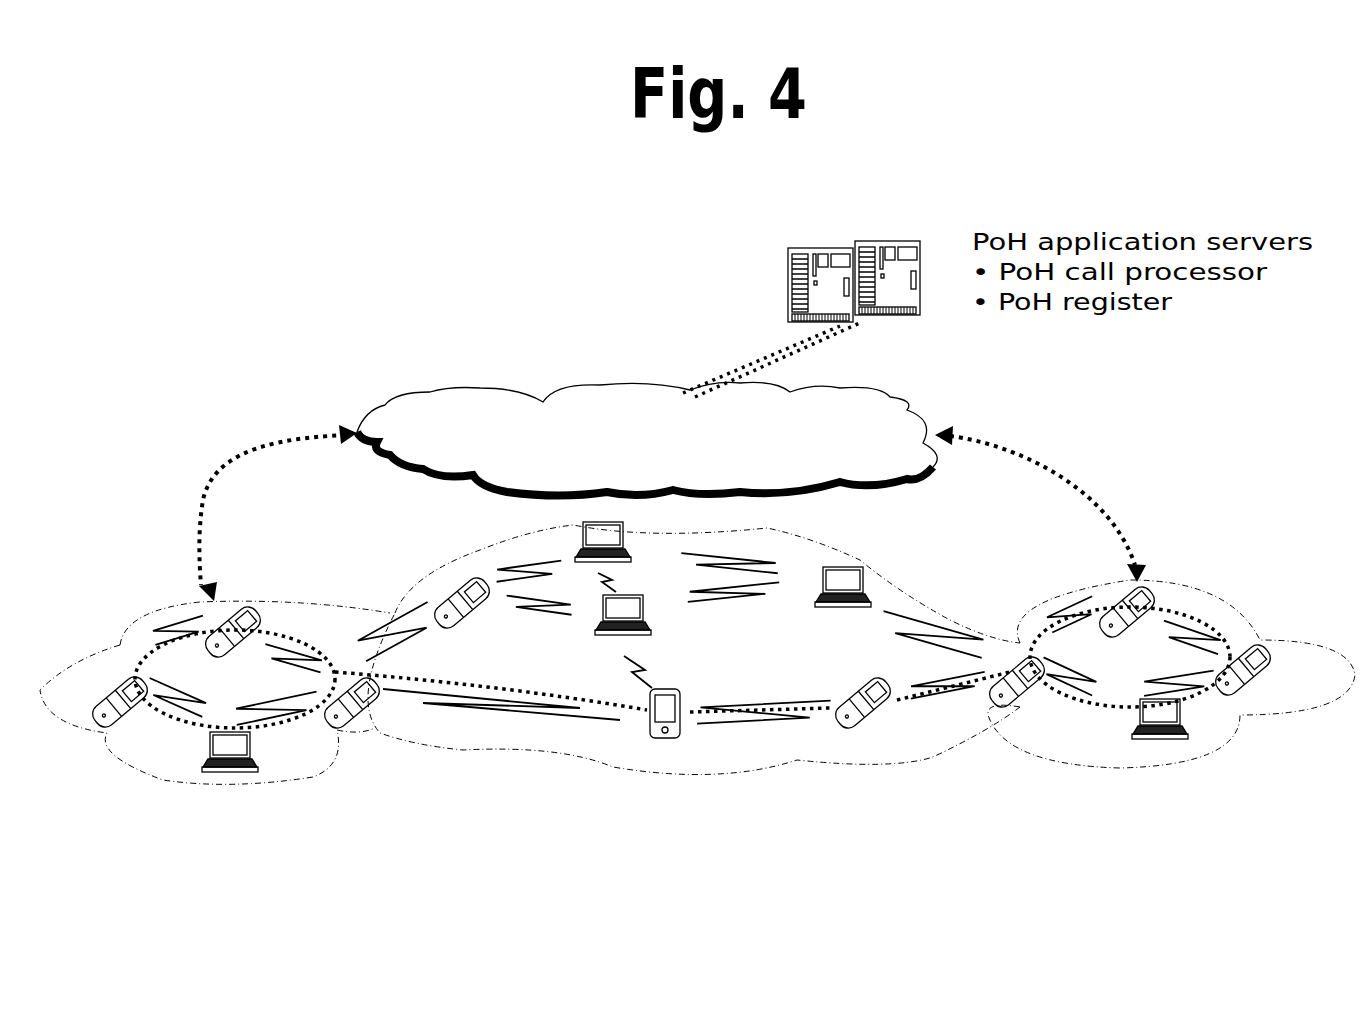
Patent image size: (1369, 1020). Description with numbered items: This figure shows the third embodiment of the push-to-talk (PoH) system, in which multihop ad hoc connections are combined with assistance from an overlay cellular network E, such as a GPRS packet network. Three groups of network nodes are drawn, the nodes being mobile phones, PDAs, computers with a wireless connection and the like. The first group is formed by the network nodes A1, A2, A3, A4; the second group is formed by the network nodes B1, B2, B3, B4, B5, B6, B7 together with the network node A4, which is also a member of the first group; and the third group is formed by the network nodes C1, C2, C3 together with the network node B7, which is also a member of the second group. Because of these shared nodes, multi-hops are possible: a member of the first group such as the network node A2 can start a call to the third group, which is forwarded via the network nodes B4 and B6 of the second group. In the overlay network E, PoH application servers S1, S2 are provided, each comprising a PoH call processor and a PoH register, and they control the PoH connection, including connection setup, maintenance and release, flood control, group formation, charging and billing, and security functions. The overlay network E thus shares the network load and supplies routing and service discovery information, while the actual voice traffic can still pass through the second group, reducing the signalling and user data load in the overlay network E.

The PoH application server S1 is at (805, 285).
The PoH application server S2 is at (894, 299).
The overlay cellular network E is at (647, 424).
The network node A1 is at (234, 619).
The network node A2 is at (102, 702).
The network node A3 is at (223, 775).
The network node A4 is at (352, 715).
The network node B1 is at (603, 529).
The network node B2 is at (644, 622).
The network node B3 is at (462, 595).
The network node B4 is at (668, 748).
The network node B5 is at (843, 575).
The network node B6 is at (863, 726).
The network node B7 is at (1017, 664).
The network node C1 is at (1142, 596).
The network node C2 is at (1258, 670).
The network node C3 is at (1160, 730).